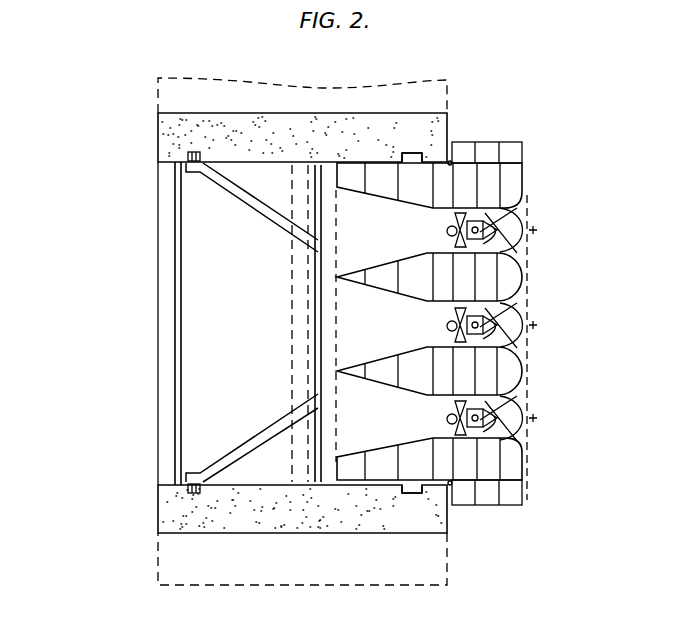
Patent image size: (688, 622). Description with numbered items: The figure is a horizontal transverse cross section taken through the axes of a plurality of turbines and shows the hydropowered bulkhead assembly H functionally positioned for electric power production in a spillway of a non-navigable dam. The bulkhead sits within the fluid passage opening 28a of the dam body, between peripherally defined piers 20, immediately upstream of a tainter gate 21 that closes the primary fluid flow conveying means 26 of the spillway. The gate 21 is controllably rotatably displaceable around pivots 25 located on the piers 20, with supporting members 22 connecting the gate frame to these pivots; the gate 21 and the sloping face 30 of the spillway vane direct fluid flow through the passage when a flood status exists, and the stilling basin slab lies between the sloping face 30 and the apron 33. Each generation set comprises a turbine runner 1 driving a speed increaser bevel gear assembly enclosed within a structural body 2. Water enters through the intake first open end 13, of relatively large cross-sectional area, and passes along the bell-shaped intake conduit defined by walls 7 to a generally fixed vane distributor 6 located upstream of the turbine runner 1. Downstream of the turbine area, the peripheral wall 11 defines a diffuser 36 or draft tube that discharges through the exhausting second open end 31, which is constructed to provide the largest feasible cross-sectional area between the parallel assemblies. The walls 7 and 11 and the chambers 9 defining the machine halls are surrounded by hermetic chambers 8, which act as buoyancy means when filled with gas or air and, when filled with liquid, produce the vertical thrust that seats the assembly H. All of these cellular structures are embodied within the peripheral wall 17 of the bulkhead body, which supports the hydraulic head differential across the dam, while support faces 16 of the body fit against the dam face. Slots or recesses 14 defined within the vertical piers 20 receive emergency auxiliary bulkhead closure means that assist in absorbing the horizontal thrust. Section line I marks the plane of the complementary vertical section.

The turbine runner 1 is at (455, 216).
The structural body 2 is at (492, 325).
The fixed vane distributor 6 is at (522, 215).
The intake conduit walls 7 is at (518, 252).
The buoyancy chambers 8 is at (515, 380).
The machine hall chambers 9 is at (468, 380).
The peripheral wall 11 is at (347, 192).
The intake first open end 13 is at (538, 229).
The slots or recesses 14 is at (414, 155).
The support faces 16 is at (452, 158).
The peripheral wall of bulkhead body 17 is at (521, 153).
The piers 20 is at (322, 139).
The tainter gate 21 is at (322, 296).
The supporting members 22 is at (257, 206).
The pivots 25 is at (195, 152).
The primary fluid flow conveying means 26 is at (219, 387).
The fluid passage opening 28a is at (186, 215).
The sloping face 30 is at (292, 338).
The exhausting second open end 31 is at (340, 238).
The apron 33 is at (160, 325).
The diffuser 36 is at (414, 419).
The hydropowered bulkhead assembly H is at (539, 190).
The section line I is at (33, 320).